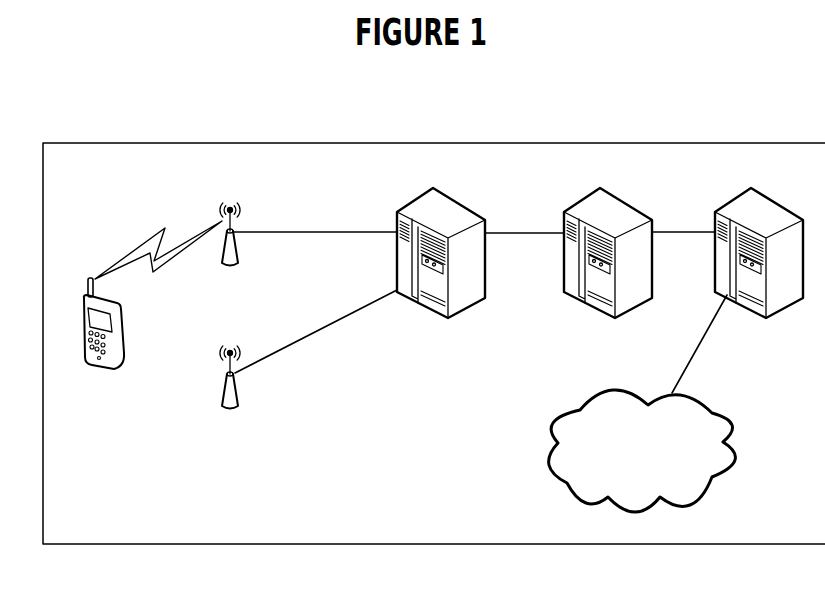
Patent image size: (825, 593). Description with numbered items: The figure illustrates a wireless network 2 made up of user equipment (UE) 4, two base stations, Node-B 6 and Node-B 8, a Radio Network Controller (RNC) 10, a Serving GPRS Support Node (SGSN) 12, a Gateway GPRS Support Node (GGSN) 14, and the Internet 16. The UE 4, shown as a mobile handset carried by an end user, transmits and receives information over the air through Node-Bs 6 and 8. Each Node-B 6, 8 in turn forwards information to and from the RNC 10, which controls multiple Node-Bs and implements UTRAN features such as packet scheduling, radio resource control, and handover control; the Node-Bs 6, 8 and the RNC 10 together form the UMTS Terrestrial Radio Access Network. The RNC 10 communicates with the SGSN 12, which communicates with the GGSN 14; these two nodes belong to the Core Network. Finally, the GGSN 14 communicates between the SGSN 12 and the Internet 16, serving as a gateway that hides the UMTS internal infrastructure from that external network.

The wireless network 2 is at (434, 343).
The user equipment (UE) 4 is at (104, 337).
The Node-B 6 is at (230, 248).
The Node-B 8 is at (229, 391).
The Radio Network Controller (RNC) 10 is at (441, 266).
The Serving General Packet Radio Service Support Node (SGSN) 12 is at (608, 266).
The Gateway General Packet Radio Service Support Node (GGSN) 14 is at (759, 266).
The Internet 16 is at (642, 451).